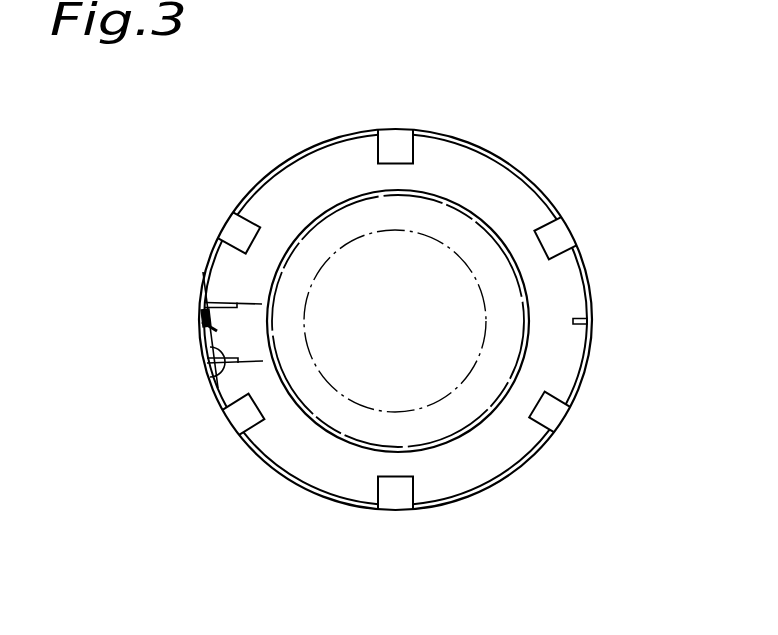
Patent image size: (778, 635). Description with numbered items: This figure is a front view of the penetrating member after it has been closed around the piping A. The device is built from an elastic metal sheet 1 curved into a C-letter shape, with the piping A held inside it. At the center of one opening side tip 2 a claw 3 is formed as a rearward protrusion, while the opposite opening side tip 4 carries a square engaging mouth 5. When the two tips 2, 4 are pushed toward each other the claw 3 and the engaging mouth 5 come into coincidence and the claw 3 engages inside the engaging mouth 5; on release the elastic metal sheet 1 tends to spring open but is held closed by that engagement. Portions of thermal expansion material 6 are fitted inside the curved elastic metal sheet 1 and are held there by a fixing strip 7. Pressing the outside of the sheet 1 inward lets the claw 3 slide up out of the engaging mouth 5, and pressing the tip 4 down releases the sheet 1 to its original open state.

The elastic metal sheet 1 is at (587, 370).
The opening side tip 2 is at (205, 370).
The claw 3 is at (205, 275).
The opening side tip 4 is at (200, 316).
The engaging mouth 5 is at (213, 388).
The thermal expansion material 6 is at (320, 178).
The fixing strip 7 is at (387, 487).
The piping A is at (470, 258).